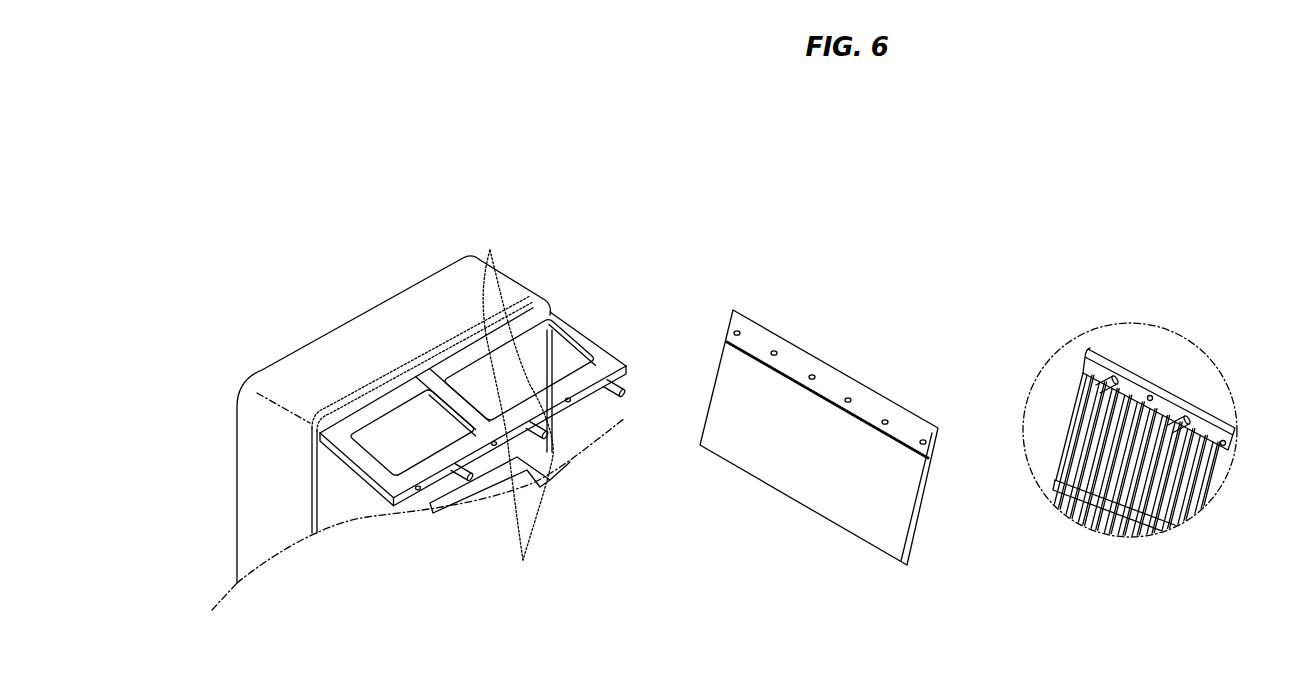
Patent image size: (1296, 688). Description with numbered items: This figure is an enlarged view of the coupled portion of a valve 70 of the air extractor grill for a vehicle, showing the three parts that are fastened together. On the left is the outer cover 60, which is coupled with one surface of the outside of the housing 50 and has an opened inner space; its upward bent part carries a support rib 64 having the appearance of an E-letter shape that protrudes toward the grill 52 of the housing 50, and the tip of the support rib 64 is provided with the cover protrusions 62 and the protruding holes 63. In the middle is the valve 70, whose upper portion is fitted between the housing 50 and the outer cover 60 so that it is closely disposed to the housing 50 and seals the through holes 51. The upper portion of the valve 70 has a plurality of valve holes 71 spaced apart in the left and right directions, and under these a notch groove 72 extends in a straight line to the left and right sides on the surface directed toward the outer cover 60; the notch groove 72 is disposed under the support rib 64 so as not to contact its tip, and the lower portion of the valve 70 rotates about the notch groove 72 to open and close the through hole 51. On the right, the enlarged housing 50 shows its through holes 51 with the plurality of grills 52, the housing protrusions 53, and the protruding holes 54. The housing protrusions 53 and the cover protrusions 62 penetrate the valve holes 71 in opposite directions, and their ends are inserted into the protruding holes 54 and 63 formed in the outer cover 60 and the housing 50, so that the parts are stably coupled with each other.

The housing 50 is at (1153, 345).
The through holes 51 is at (1070, 510).
The grills 52 is at (1197, 500).
The housing protrusions 53 is at (1110, 378).
The protruding holes 54 is at (1152, 398).
The outer cover 60 is at (380, 332).
The cover protrusions 62 is at (490, 250).
The protruding holes 63 is at (462, 506).
The support rib 64 is at (363, 480).
The valve 70 is at (763, 460).
The valve holes 71 is at (848, 397).
The notch groove 72 is at (753, 353).